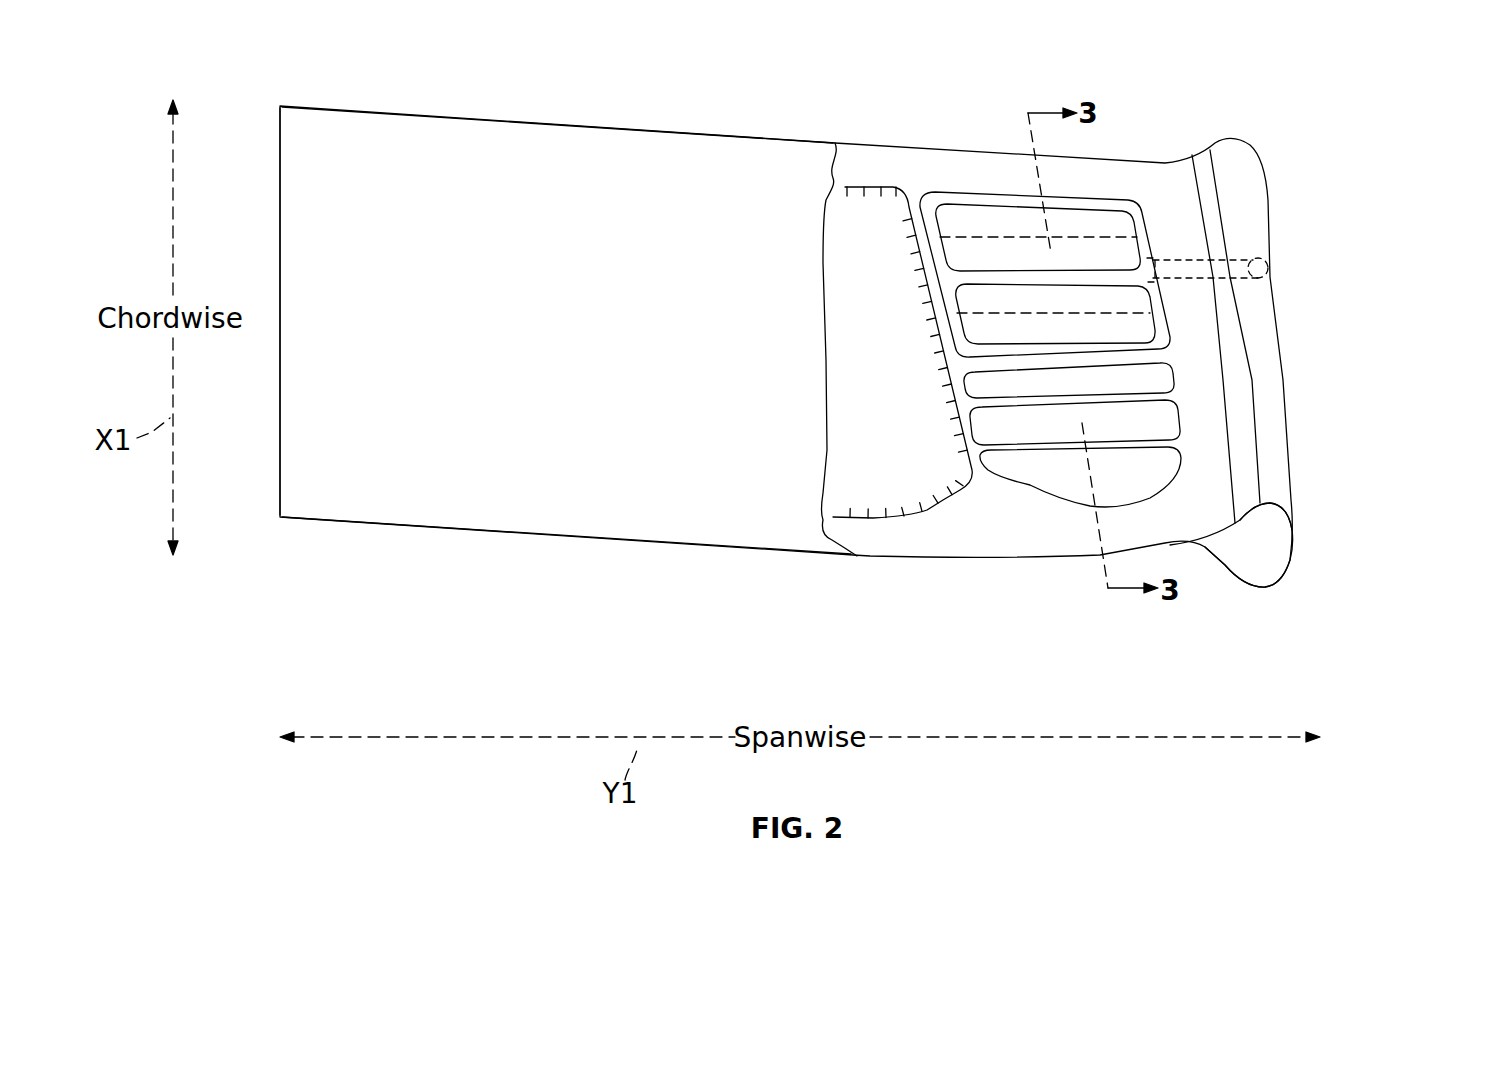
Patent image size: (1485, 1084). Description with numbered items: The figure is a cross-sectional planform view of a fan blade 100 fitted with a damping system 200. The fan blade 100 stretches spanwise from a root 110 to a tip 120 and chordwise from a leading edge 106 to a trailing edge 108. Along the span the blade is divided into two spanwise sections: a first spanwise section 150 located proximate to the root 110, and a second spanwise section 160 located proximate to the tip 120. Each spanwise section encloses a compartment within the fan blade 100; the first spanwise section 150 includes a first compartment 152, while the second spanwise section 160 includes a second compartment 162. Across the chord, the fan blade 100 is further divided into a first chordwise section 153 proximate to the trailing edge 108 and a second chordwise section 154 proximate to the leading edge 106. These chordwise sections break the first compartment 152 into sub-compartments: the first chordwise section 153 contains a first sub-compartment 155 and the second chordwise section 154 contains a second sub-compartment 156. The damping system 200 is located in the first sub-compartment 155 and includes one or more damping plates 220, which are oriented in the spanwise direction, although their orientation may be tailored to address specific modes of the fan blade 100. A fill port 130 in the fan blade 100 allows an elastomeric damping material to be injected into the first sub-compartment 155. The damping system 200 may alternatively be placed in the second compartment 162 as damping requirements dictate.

The fan blade 100 is at (786, 369).
The leading edge 106 is at (518, 536).
The trailing edge 108 is at (442, 117).
The root 110 is at (1277, 543).
The tip 120 is at (292, 375).
The fill port 130 is at (1262, 270).
The first spanwise section 150 is at (1292, 630).
The first compartment 152 is at (973, 257).
The first chordwise section 153 is at (1154, 222).
The second chordwise section 154 is at (1167, 444).
The first sub-compartment 155 is at (1103, 230).
The second sub-compartment 156 is at (1147, 417).
The second spanwise section 160 is at (280, 630).
The second compartment 162 is at (863, 468).
The damping system 200 is at (832, 364).
The damping plate 220 is at (977, 200).